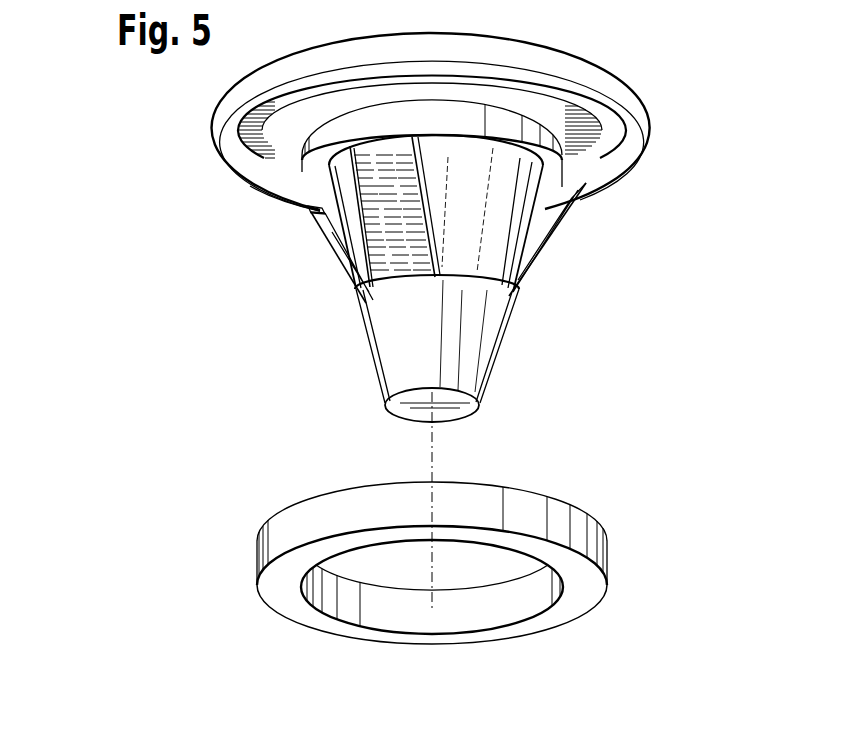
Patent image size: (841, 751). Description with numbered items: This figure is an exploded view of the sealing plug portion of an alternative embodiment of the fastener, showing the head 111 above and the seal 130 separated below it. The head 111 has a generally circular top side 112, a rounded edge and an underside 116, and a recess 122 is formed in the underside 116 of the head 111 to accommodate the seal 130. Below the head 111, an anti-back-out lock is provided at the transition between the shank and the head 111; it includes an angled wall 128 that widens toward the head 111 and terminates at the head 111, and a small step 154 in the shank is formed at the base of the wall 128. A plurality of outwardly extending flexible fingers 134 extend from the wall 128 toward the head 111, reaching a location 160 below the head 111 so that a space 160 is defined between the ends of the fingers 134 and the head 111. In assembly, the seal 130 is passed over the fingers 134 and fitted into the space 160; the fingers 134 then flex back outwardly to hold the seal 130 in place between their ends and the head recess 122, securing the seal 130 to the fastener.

The head 111 is at (318, 50).
The top side 112 is at (525, 47).
The underside 116 is at (603, 134).
The recess 122 is at (298, 150).
The angled wall 128 is at (507, 217).
The seal 130 is at (610, 550).
The flexible fingers 134 is at (333, 262).
The step 154 is at (305, 178).
The space 160 is at (310, 211).